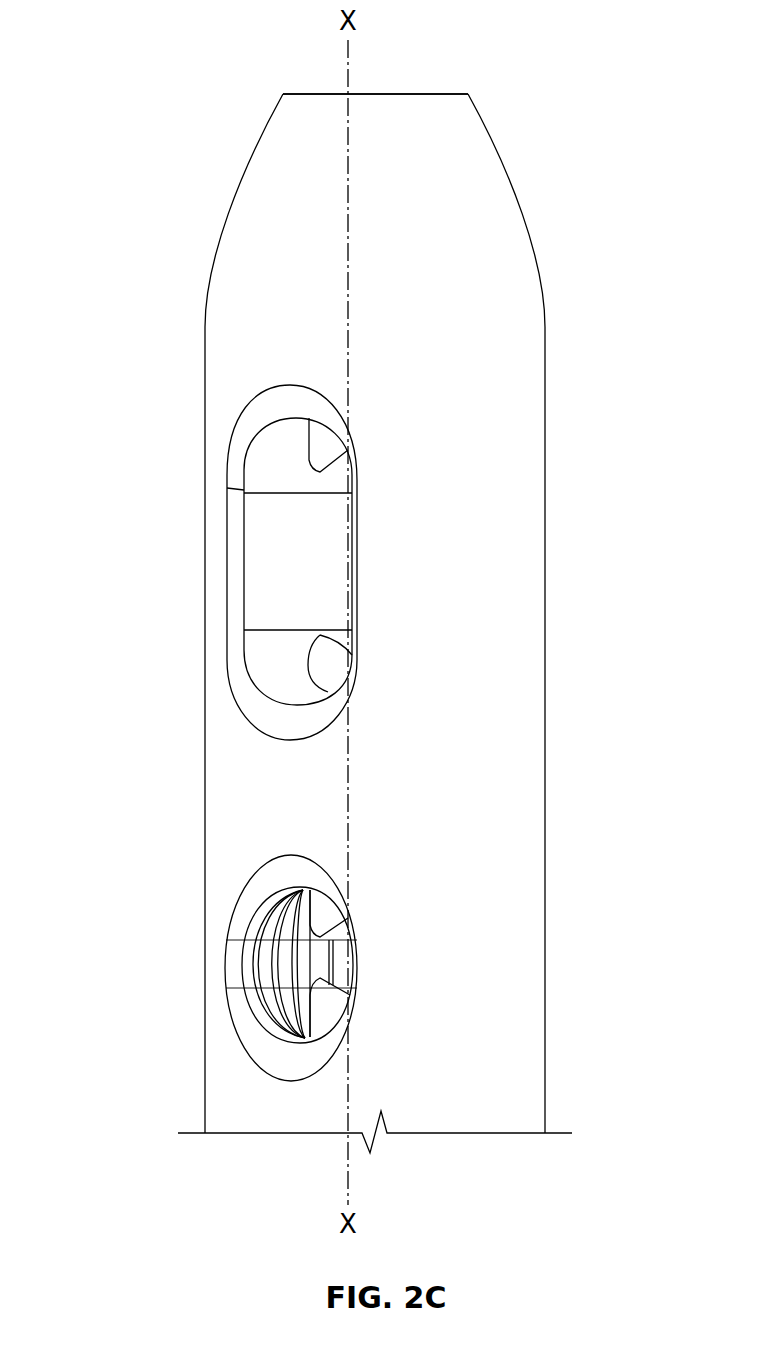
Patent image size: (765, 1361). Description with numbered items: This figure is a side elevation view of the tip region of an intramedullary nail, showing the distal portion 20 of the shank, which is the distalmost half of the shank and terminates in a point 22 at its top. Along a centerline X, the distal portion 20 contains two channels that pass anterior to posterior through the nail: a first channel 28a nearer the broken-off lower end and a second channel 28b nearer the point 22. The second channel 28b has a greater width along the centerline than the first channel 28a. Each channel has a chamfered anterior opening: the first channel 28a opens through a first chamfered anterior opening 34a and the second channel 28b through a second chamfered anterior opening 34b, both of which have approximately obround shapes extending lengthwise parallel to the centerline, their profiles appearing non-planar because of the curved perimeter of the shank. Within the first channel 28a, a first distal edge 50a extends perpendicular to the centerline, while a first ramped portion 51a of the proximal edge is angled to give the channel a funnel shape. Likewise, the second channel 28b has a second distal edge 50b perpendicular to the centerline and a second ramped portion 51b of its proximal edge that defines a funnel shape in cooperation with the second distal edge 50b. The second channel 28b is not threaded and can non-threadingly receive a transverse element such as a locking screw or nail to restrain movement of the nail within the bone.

The distal portion 20 is at (548, 53).
The point 22 is at (315, 93).
The first channel 28a is at (178, 976).
The second channel 28b is at (164, 552).
The first chamfered anterior opening 34a is at (247, 1070).
The second chamfered anterior opening 34b is at (243, 695).
The first distal edge 50a is at (260, 892).
The second distal edge 50b is at (280, 427).
The first ramped portion 51a is at (248, 1040).
The second ramped portion 51b is at (278, 690).